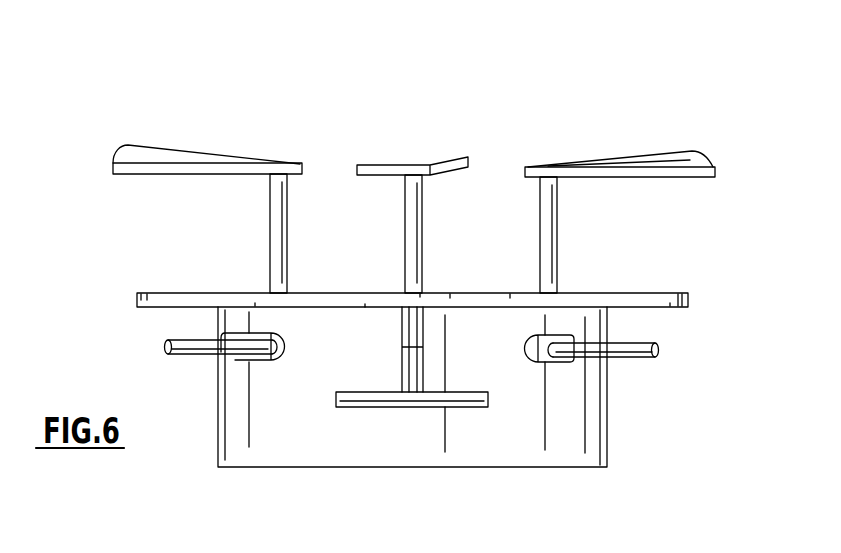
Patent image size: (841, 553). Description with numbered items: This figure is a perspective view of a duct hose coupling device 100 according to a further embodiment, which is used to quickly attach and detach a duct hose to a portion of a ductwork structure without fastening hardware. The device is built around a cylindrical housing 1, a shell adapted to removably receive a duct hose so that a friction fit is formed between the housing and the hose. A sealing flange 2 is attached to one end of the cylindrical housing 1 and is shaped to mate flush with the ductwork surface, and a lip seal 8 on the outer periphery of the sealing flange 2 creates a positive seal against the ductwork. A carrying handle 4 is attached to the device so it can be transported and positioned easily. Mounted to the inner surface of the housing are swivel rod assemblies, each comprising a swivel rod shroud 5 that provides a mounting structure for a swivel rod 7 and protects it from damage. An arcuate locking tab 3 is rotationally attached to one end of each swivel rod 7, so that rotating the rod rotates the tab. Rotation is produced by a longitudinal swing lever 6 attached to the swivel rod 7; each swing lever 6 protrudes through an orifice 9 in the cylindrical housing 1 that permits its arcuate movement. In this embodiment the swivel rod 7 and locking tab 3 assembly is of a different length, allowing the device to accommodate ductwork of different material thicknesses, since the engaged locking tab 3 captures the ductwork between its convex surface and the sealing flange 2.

The duct hose coupling device 100 is at (662, 49).
The cylindrical housing 1 is at (560, 460).
The sealing flange 2 is at (637, 306).
The locking tab 3 is at (163, 152).
The carrying handle 4 is at (412, 332).
The swivel rod shroud 5 is at (235, 353).
The swing lever 6 is at (178, 347).
The swivel rod 7 is at (288, 233).
The lip seal 8 is at (152, 300).
The orifice 9 is at (253, 362).